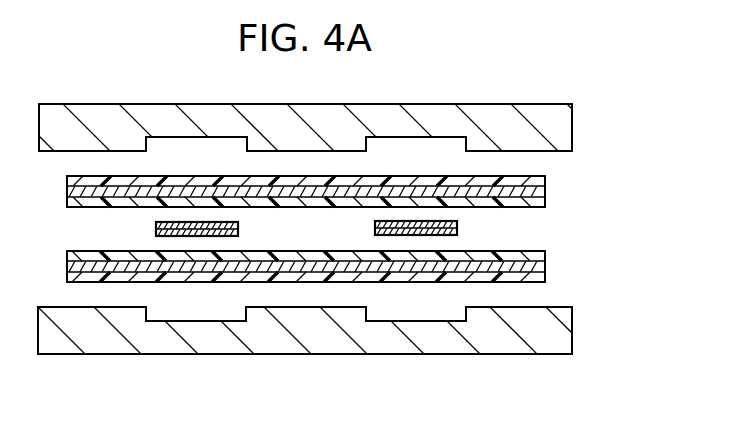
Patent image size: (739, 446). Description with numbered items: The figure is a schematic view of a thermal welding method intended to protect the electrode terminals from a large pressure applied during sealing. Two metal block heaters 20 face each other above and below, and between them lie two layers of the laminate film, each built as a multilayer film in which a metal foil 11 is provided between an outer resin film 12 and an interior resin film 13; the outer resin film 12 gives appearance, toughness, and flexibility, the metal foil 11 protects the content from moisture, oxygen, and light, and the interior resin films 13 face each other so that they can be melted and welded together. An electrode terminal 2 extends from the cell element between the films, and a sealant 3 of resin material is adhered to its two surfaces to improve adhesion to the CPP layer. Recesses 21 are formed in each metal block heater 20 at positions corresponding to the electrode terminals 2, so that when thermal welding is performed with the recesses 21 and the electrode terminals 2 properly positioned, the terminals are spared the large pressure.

The electrode terminal 2 is at (319, 319).
The sealant 3 is at (457, 225).
The metal foil 11 is at (535, 205).
The resin film 12 is at (540, 180).
The resin film 13 is at (353, 236).
The metal block heater 20 is at (560, 130).
The recess 21 is at (435, 139).